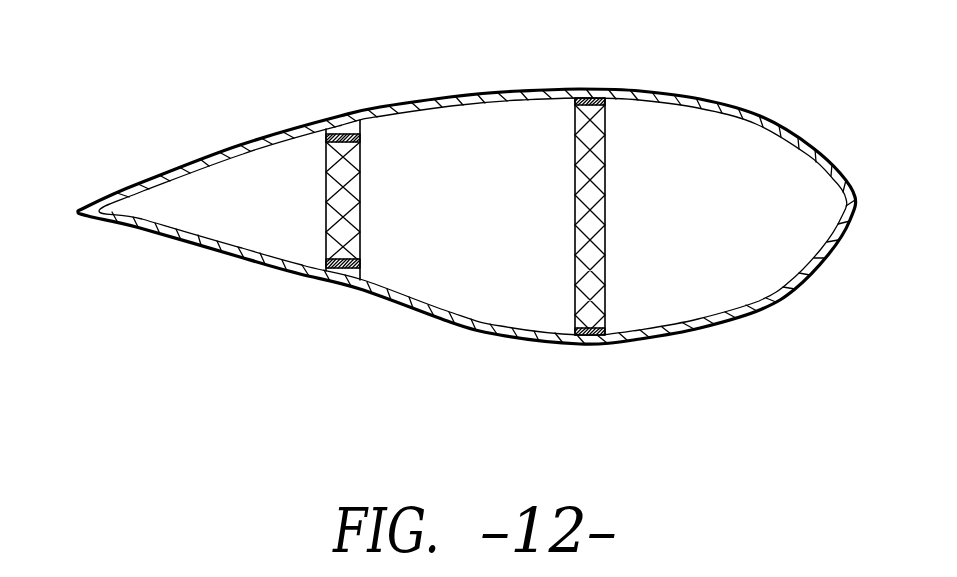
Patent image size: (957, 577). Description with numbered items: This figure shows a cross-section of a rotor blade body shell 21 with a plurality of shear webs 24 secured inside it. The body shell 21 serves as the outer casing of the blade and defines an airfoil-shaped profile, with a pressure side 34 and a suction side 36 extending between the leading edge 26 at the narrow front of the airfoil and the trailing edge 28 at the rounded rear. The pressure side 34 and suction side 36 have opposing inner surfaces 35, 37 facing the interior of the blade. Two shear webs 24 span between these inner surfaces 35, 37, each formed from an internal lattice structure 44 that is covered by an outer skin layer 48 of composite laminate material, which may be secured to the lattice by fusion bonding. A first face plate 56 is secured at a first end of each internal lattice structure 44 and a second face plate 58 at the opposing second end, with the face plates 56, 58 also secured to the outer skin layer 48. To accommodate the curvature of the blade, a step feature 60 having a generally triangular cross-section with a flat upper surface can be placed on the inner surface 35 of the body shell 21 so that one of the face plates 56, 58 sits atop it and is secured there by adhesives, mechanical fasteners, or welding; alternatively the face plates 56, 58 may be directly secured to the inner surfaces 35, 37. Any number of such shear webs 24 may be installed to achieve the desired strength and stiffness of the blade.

The body shell 21 is at (464, 216).
The shear web 24 is at (472, 204).
The leading edge 26 is at (857, 200).
The trailing edge 28 is at (75, 213).
The pressure side 34 is at (449, 331).
The inner surface of the pressure side 35 is at (783, 288).
The suction side 36 is at (414, 98).
The inner surface of the suction side 37 is at (440, 108).
The internal lattice structure 44 is at (361, 242).
The outer skin layer 48 is at (324, 232).
The first face plate 56 is at (322, 138).
The second face plate 58 is at (320, 266).
The step feature 60 is at (343, 128).